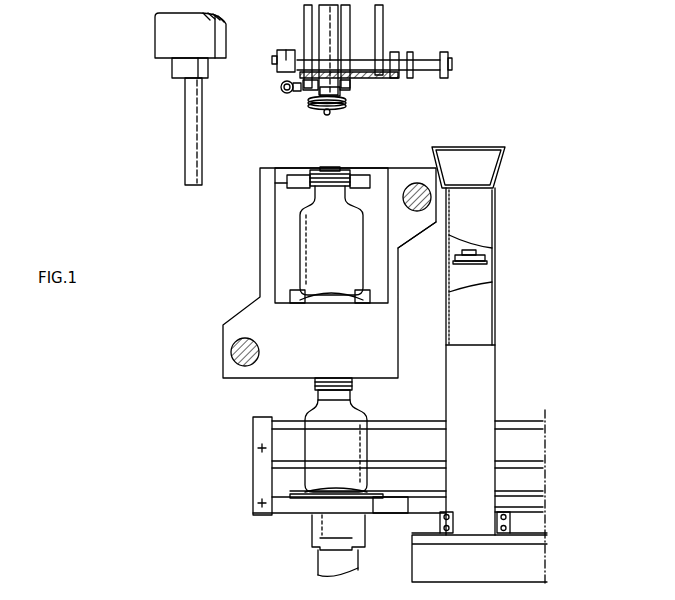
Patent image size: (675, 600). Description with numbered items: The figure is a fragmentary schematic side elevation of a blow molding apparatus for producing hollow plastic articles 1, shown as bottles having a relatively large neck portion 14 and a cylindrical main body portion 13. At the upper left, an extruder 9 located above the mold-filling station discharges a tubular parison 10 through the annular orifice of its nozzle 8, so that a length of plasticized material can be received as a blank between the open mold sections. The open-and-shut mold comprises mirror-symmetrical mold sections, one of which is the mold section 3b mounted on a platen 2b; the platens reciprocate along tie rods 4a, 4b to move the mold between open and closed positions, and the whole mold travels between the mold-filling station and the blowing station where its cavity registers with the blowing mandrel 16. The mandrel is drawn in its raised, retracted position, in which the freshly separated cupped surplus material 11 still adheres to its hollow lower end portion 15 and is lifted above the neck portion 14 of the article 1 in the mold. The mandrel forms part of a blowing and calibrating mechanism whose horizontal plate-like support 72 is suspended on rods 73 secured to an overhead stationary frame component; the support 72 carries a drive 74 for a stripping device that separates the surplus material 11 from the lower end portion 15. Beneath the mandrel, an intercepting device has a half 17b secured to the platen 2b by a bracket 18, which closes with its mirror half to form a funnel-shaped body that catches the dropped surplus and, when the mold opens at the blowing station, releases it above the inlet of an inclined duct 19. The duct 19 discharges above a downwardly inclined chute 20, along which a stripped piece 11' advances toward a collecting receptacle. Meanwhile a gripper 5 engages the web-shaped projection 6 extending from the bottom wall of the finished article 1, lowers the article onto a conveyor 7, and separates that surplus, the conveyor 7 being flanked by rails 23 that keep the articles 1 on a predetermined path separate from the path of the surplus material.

The hollow plastic article 1 is at (363, 414).
The platen 2b is at (345, 349).
The mold section 3b is at (280, 251).
The tie rod 4a is at (413, 182).
The tie rod 4b is at (236, 343).
The gripper 5 is at (325, 565).
The web-shaped projection 6 is at (330, 498).
The conveyor 7 is at (402, 495).
The nozzle 8 is at (176, 68).
The extruder 9 is at (172, 40).
The tubular parison 10 is at (190, 123).
The surplus material 11 is at (334, 119).
The separated piece of surplus material 11' is at (496, 249).
The cylindrical main body portion 13 is at (275, 445).
The neck portion 14 is at (316, 170).
The lower end portion of the blowing mandrel 15 is at (327, 110).
The blowing mandrel 16 is at (320, 22).
The portion of the intercepting device 17b is at (475, 156).
The bracket 18 is at (434, 224).
The duct 19 is at (478, 278).
The chute 20 is at (536, 565).
The side wall or rail 23 is at (417, 462).
The plate-like support 72 is at (322, 95).
The rod 73 is at (380, 26).
The drive 74 is at (432, 76).